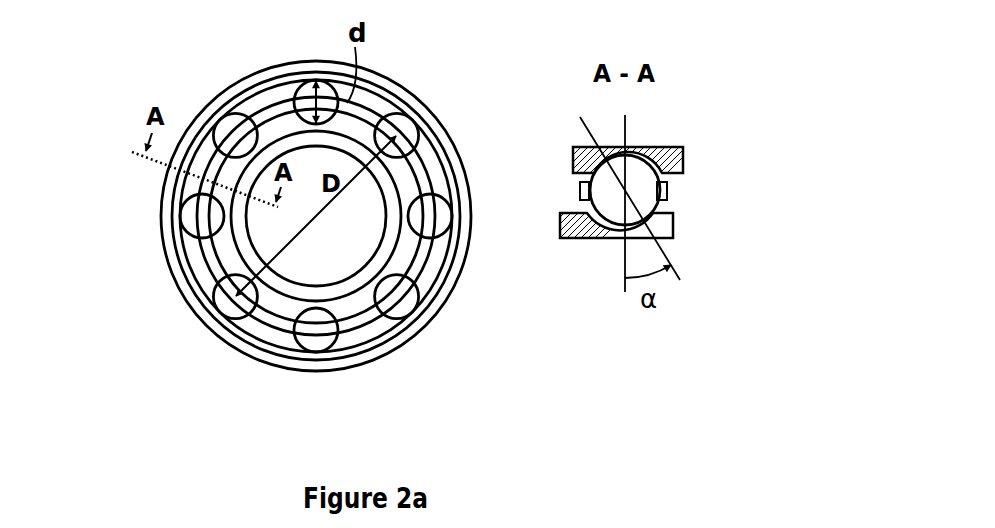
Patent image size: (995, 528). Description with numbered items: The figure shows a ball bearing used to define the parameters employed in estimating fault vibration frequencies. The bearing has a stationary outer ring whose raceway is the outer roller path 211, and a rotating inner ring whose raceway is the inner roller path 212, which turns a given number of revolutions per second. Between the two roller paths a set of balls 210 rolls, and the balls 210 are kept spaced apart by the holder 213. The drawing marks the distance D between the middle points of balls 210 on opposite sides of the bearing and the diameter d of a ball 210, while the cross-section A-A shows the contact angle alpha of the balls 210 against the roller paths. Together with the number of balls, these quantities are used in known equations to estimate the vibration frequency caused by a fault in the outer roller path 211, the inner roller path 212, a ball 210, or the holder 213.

The ball 210 is at (187, 215).
The outer roller path 211 is at (472, 170).
The inner roller path 212 is at (353, 297).
The holder 213 is at (278, 322).